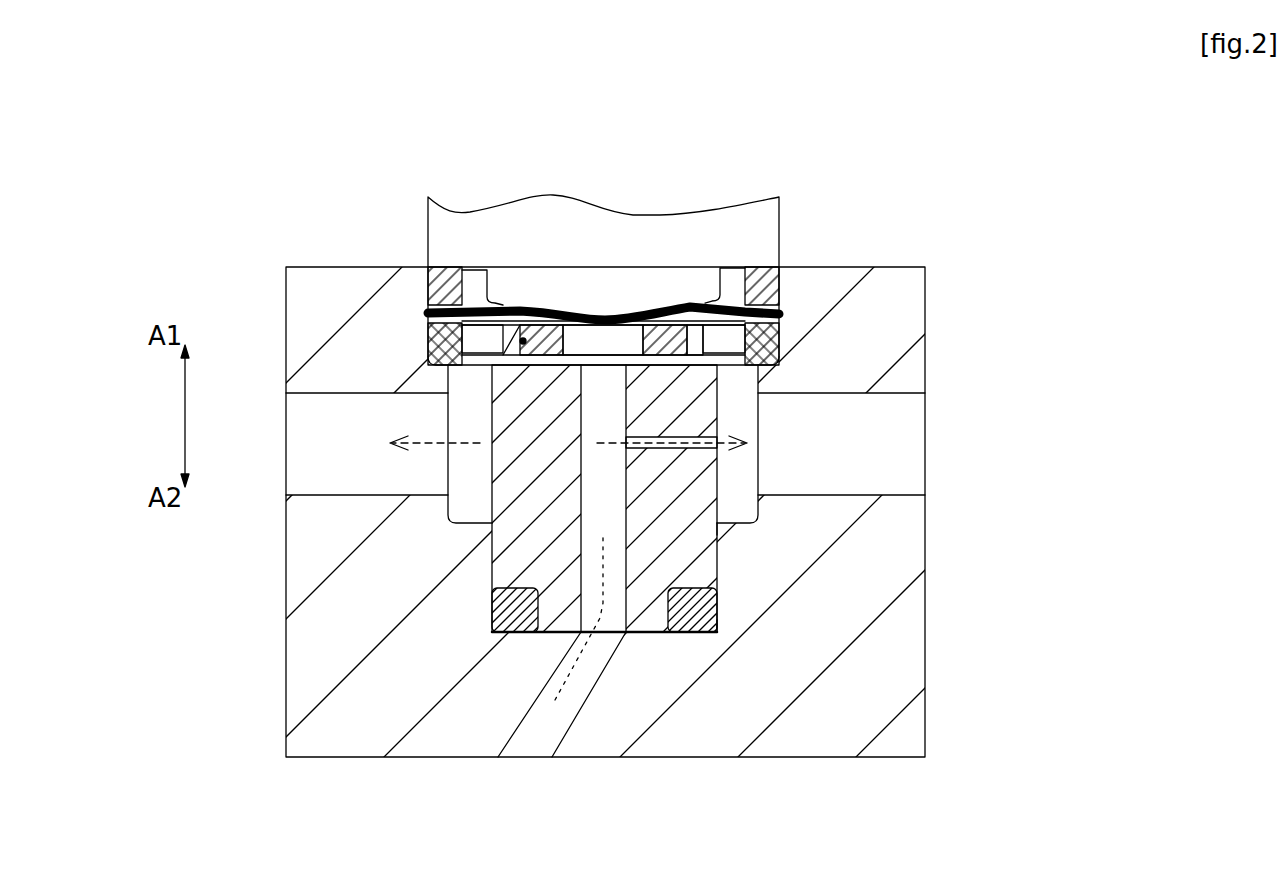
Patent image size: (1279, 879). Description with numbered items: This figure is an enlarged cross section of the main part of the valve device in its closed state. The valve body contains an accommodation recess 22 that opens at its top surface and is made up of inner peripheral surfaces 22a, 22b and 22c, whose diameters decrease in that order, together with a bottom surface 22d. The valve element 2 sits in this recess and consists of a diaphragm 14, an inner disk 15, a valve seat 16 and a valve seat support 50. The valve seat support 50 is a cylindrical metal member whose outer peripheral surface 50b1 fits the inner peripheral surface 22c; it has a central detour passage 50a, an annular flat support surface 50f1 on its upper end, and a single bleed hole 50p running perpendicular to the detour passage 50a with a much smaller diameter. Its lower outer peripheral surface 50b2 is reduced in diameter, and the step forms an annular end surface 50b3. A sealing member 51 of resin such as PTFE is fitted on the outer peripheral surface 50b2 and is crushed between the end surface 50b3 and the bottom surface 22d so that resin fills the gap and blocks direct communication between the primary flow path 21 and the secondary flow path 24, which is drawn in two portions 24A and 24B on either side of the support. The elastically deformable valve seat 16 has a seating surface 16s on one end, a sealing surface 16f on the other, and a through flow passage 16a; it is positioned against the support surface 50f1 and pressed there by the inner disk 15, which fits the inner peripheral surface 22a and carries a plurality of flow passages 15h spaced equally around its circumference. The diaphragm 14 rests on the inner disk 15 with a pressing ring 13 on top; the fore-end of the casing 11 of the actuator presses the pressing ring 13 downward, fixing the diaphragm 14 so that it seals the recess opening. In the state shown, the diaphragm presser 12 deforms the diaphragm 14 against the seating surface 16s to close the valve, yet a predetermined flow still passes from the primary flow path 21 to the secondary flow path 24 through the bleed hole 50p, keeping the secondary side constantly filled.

The valve element 2 is at (615, 440).
The casing 11 is at (733, 207).
The diaphragm presser 12 is at (643, 280).
The pressing ring 13 is at (781, 301).
The diaphragm 14 is at (427, 265).
The inner disk 15 is at (737, 403).
The flow passages 15h is at (727, 337).
The valve seat 16 is at (593, 303).
The flow passage 16a is at (610, 342).
The sealing surface 16f is at (520, 363).
The seating surface 16s is at (523, 340).
The primary flow path 21 is at (537, 738).
The accommodation recess 22 is at (867, 393).
The inner peripheral surface 22a is at (447, 357).
The inner peripheral surface 22b is at (490, 528).
The inner peripheral surface 22c is at (490, 590).
The bottom surface 22d is at (615, 603).
The secondary flow path 24 is at (639, 540).
The block first part 24A is at (305, 455).
The block second part 24B is at (858, 455).
The valve seat support 50 is at (738, 574).
The detour passage 50a is at (627, 633).
The outer peripheral surface 50b1 is at (717, 530).
The outer peripheral surface 50b2 is at (717, 632).
The end surface 50b3 is at (720, 608).
The support surface 50f1 is at (517, 355).
The bleed hole 50p is at (722, 436).
The sealing member 51 is at (493, 627).